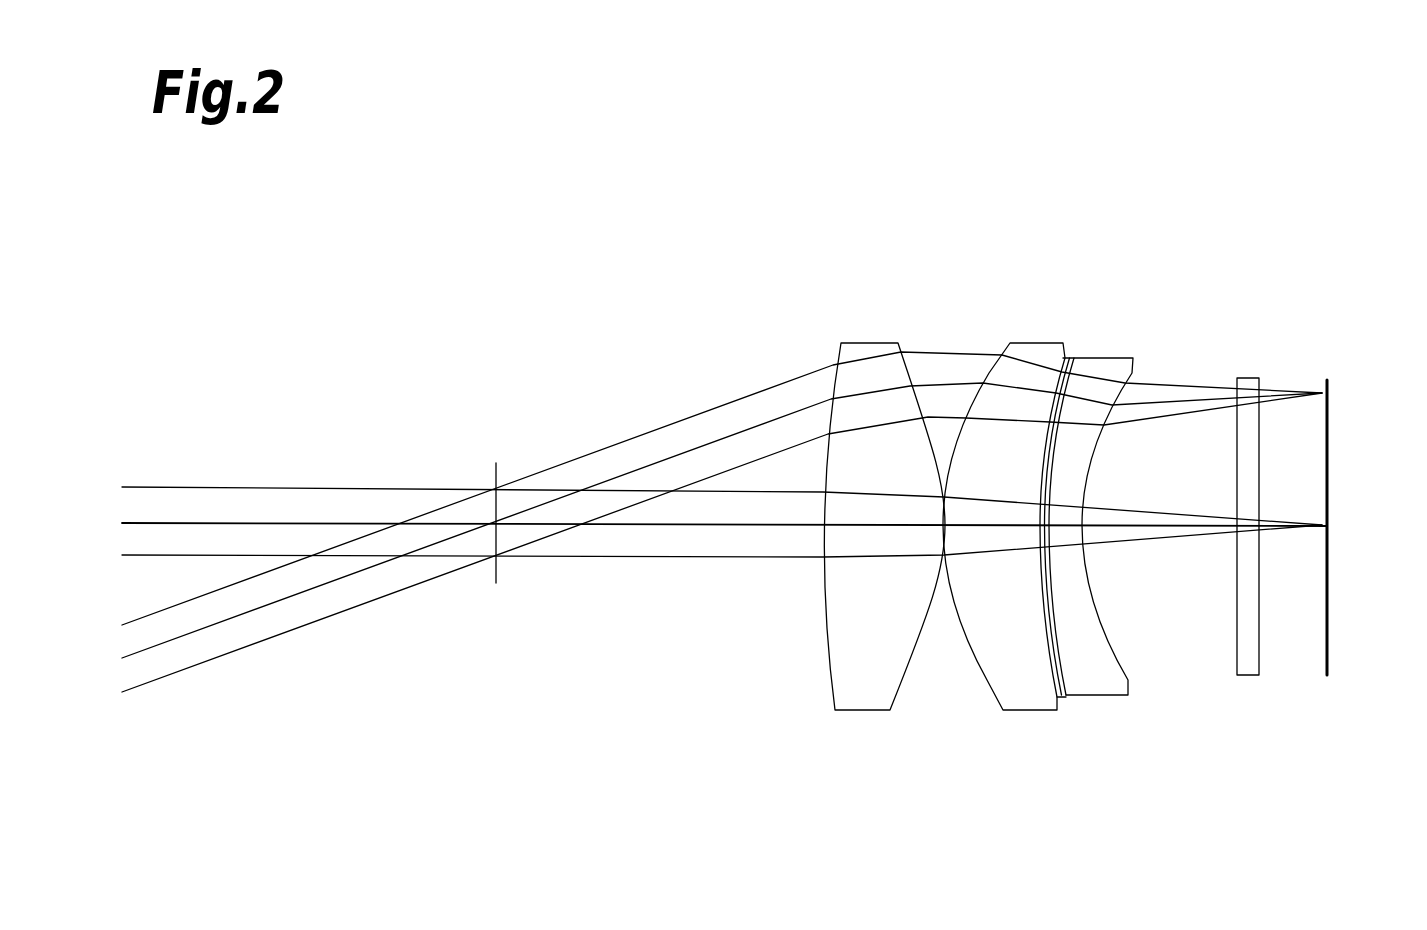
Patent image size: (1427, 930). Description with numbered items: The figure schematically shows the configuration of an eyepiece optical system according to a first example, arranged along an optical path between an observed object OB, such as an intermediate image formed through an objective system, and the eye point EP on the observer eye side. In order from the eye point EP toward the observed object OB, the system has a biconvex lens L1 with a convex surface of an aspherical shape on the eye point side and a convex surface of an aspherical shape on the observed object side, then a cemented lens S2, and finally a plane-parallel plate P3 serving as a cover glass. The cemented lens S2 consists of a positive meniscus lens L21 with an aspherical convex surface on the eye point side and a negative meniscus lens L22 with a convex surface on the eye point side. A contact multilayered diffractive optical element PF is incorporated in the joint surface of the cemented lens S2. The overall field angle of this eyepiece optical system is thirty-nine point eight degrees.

The biconvex lens L1 is at (868, 350).
The cemented lens S2 is at (1157, 217).
The positive meniscus lens L21 is at (1033, 348).
The negative meniscus lens L22 is at (1104, 368).
The contact multilayered diffractive optical element PF is at (1063, 698).
The plane-parallel plate P3 is at (1248, 384).
The observed object OB is at (1330, 421).
The eye point EP is at (493, 545).